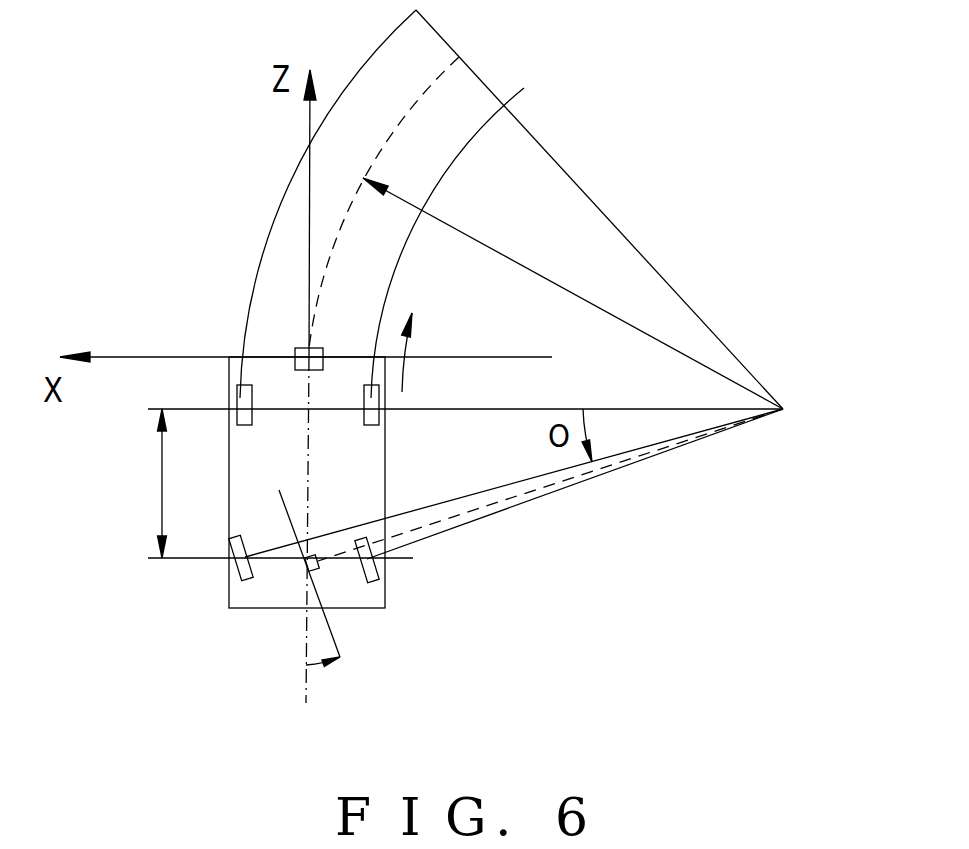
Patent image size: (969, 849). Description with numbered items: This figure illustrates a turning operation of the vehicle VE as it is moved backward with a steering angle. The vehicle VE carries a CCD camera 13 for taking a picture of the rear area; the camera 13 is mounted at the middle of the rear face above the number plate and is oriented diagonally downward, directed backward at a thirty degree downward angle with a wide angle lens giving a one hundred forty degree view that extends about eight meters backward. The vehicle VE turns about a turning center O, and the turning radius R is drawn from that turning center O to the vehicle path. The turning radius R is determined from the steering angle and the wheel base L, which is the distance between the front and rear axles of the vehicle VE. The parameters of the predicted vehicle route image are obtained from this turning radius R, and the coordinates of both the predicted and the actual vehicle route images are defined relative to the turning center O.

The CCD camera 13 is at (308, 346).
The vehicle VE is at (363, 590).
The turning radius R is at (573, 293).
The wheel base L is at (148, 483).
The turning center O is at (795, 452).